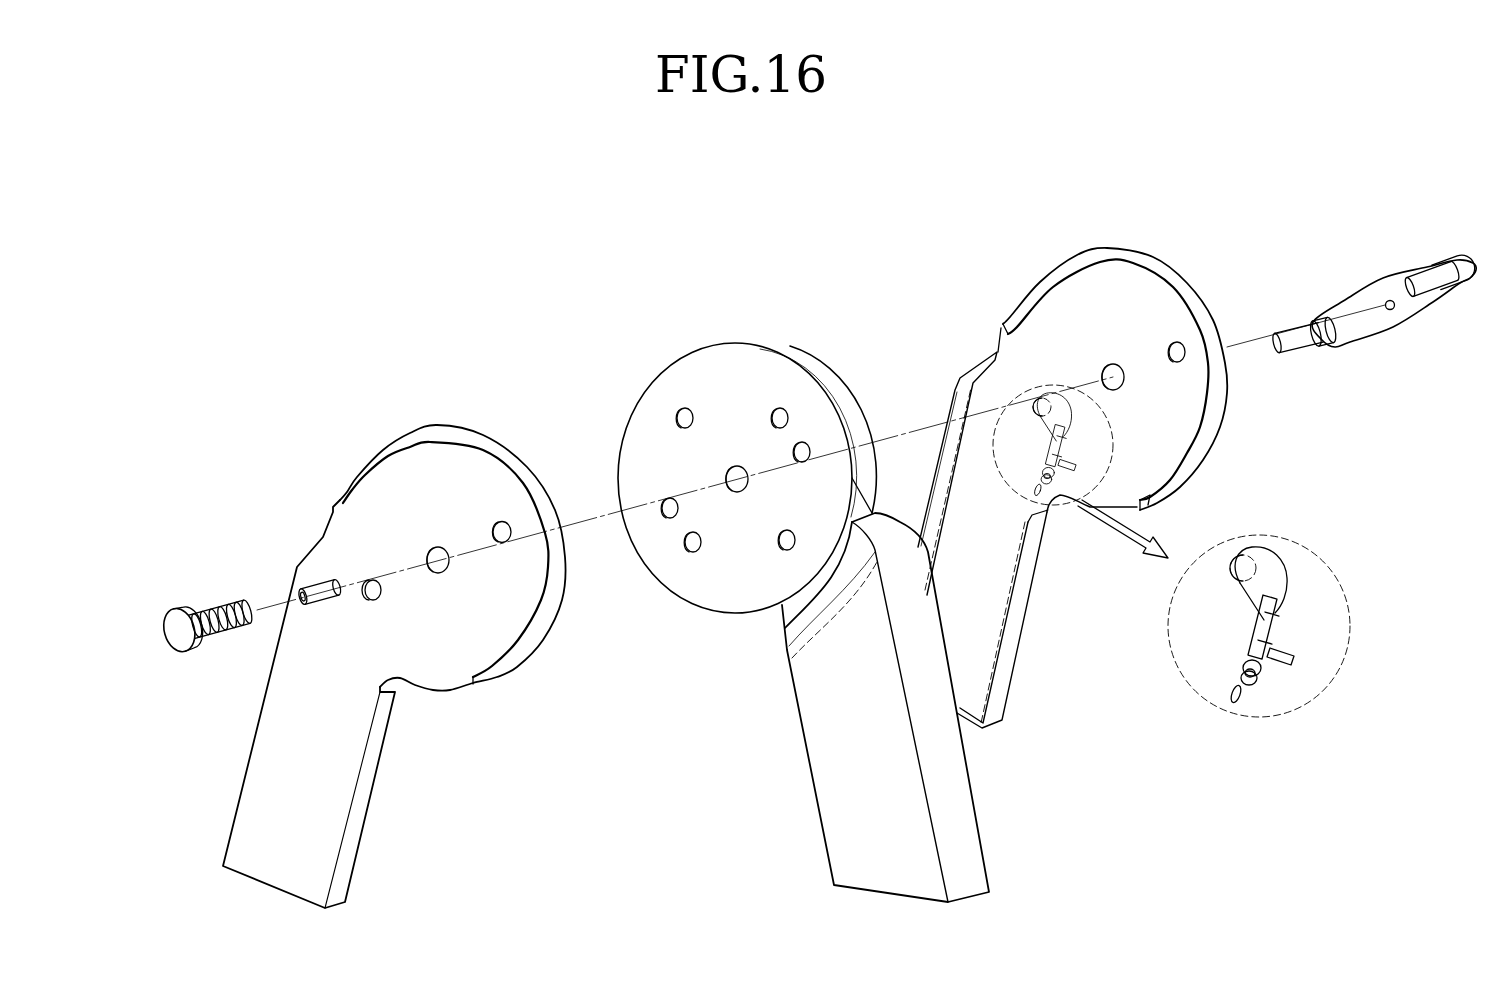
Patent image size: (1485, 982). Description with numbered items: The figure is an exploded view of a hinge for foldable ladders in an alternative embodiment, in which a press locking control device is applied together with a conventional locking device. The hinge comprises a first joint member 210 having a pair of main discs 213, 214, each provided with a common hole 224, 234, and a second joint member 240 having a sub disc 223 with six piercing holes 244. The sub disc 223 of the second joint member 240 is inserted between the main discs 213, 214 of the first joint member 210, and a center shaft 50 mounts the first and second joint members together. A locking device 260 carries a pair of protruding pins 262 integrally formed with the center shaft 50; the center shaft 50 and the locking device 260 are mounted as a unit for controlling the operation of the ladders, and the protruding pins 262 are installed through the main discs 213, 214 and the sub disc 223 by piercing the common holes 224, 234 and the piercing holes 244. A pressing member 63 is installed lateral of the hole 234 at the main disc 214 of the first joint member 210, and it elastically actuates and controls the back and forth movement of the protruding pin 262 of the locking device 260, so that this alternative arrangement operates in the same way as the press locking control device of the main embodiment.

The center shaft 50 is at (205, 584).
The first joint member 210 is at (413, 418).
The main disc 213 is at (475, 467).
The common hole 224 is at (367, 582).
The second joint member 240 is at (732, 447).
The sub disc 223 is at (702, 385).
The piercing holes 244 is at (770, 410).
The pressing member 63 is at (1007, 387).
The main disc 214 is at (1145, 302).
The common hole 234 is at (1175, 357).
The locking device 260 is at (1355, 287).
The protruding pin 262 is at (1363, 280).